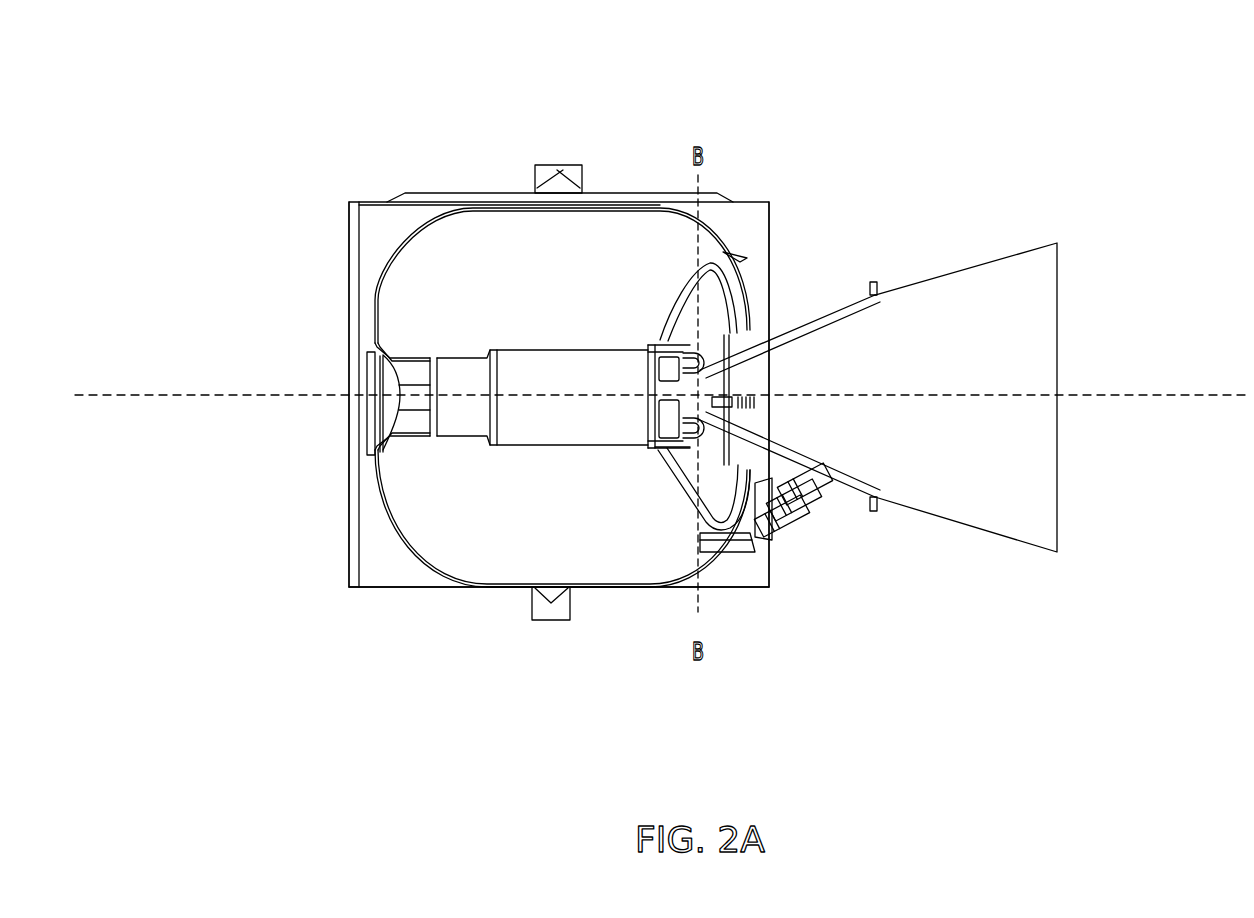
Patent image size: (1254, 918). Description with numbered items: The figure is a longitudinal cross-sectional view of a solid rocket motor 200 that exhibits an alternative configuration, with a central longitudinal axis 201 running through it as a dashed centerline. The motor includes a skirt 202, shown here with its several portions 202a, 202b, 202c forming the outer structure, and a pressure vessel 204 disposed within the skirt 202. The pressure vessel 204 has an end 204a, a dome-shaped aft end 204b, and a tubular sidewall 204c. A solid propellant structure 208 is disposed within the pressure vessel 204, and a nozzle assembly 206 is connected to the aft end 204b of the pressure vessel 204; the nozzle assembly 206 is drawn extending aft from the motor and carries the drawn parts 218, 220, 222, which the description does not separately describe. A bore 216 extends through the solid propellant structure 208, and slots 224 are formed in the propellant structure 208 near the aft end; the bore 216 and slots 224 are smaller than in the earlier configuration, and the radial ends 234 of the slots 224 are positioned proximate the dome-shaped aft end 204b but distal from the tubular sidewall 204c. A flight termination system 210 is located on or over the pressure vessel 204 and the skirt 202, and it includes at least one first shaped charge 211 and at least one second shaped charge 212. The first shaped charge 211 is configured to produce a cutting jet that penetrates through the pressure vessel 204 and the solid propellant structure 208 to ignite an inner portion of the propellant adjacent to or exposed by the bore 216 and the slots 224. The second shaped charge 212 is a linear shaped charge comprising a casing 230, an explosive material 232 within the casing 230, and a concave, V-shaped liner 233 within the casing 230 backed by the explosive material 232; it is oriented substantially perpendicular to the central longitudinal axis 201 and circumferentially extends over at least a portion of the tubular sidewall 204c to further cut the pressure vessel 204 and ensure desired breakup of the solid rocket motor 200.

The solid rocket motor 200 is at (242, 84).
The central longitudinal axis 201 is at (1187, 392).
The skirt 202 is at (390, 588).
The skirt portion 202a is at (352, 537).
The skirt portion 202b is at (782, 214).
The skirt portion 202c is at (378, 200).
The pressure vessel 204 is at (485, 190).
The pressure vessel end 204a is at (377, 478).
The dome-shaped aft end 204b is at (758, 307).
The tubular sidewall 204c is at (493, 588).
The nozzle assembly 206 is at (1029, 580).
The solid propellant structure 208 is at (410, 297).
The flight termination system 210 is at (794, 35).
The first shaped charge 211 is at (735, 250).
The second shaped charge 212 is at (674, 35).
The bore 216 is at (508, 362).
The antenna dish 218 is at (970, 505).
The thruster 220 is at (810, 500).
The thruster 222 is at (780, 523).
The slots 224 is at (692, 470).
The casing 230 is at (550, 165).
The explosive material 232 is at (568, 168).
The concave liner 233 is at (557, 175).
The radial ends 234 is at (715, 532).